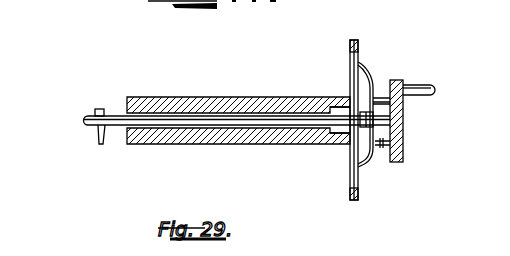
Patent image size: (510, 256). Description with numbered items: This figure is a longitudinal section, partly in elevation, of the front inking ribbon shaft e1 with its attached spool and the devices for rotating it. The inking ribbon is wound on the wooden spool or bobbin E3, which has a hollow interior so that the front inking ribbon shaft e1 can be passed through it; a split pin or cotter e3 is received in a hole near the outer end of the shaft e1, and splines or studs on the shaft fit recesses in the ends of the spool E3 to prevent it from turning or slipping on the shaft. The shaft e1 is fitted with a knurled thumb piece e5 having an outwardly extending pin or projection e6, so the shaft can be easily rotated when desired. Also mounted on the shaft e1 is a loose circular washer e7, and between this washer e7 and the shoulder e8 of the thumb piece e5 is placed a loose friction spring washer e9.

The wooden spool or bobbin E3 is at (233, 97).
The front inking ribbon shaft e1 is at (112, 126).
The split pin or cotter e3 is at (95, 112).
The loose circular washer e7 is at (350, 47).
The loose friction spring washer e9 is at (366, 80).
The knurled thumb piece e5 is at (403, 126).
The outwardly extending pin or projection e6 is at (436, 90).
The shoulder e8 is at (380, 148).